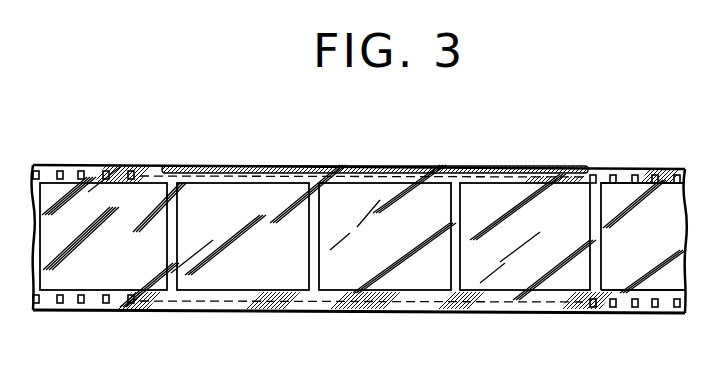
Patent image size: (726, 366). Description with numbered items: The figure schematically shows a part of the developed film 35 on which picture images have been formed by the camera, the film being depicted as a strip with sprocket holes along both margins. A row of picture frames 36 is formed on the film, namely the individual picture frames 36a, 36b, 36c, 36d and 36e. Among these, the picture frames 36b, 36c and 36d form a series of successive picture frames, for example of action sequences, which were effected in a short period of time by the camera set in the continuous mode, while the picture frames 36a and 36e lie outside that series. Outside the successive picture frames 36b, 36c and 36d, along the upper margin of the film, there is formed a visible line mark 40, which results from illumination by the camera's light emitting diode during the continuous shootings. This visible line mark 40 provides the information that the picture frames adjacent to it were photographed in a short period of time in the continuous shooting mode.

The film strip 35 is at (503, 313).
The image frames 36 is at (363, 263).
The picture frame 36a is at (643, 236).
The successive picture frame 36b is at (528, 237).
The successive picture frame 36c is at (387, 229).
The successive picture frame 36d is at (258, 227).
The picture frame 36e is at (113, 237).
The visible line mark 40 is at (482, 167).